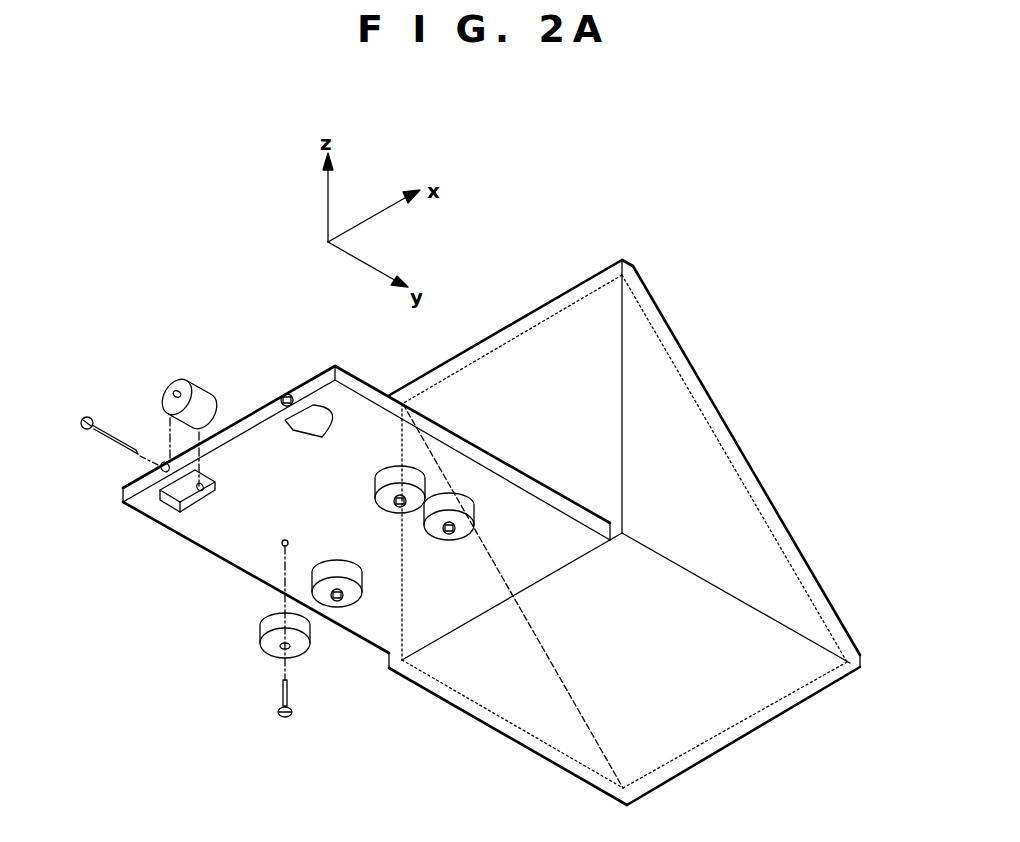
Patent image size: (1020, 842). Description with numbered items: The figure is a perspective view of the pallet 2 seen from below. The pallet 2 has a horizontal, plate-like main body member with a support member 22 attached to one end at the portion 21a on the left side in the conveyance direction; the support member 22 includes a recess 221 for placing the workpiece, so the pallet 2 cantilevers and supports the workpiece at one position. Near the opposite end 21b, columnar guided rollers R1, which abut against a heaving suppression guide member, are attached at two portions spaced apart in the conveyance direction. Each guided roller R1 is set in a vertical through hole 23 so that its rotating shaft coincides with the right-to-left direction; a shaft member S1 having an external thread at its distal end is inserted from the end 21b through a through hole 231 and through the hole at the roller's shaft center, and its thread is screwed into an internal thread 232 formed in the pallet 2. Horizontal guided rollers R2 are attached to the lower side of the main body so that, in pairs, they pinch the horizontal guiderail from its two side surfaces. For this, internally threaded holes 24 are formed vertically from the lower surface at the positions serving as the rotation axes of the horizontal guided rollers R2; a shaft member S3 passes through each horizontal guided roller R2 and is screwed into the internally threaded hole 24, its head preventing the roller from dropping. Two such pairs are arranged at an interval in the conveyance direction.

The pallet 2 is at (491, 514).
The portion where the support member is attached 21a is at (492, 600).
The end of the main body member 21b is at (310, 388).
The support member 22 is at (624, 461).
The recess 221 is at (692, 426).
The through hole 23 is at (138, 525).
The through hole 231 is at (158, 466).
The internal thread 232 is at (187, 506).
The internally threaded hole 24 is at (282, 548).
The guided roller R1 is at (200, 380).
The horizontal guided roller R2 is at (262, 632).
The shaft member S1 is at (100, 425).
The shaft member S3 is at (278, 702).